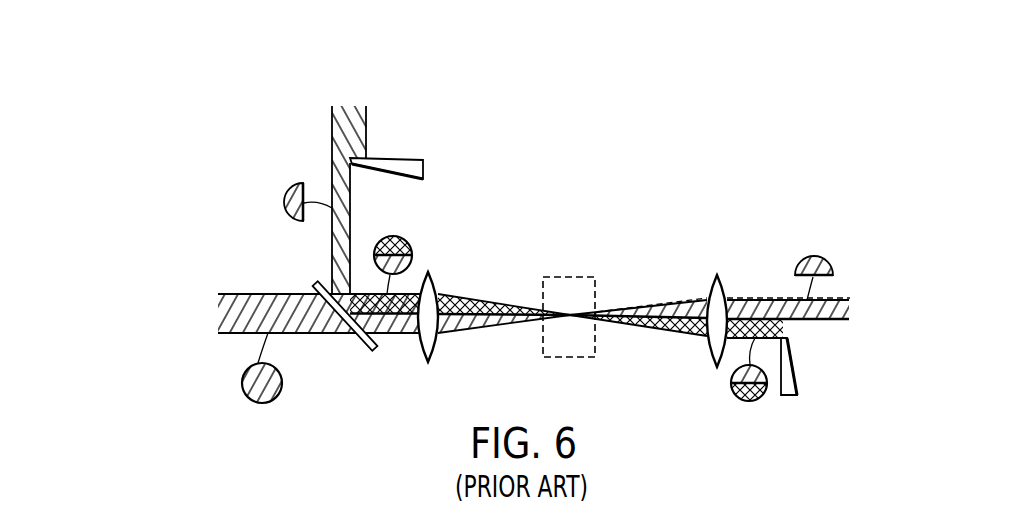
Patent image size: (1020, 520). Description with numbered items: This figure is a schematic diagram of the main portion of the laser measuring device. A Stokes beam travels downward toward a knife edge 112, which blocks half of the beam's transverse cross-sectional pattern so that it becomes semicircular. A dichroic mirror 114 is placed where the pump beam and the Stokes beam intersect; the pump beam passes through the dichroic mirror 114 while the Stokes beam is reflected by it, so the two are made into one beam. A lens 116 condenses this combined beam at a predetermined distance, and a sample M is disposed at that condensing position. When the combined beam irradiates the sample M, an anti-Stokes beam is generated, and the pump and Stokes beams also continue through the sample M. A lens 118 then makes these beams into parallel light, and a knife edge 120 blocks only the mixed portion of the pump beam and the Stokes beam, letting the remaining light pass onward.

The knife edge 112 is at (407, 157).
The dichroic mirror 114 is at (363, 341).
The lens 116 is at (438, 343).
The lens 118 is at (707, 345).
The knife edge 120 is at (795, 373).
The sample M is at (570, 274).